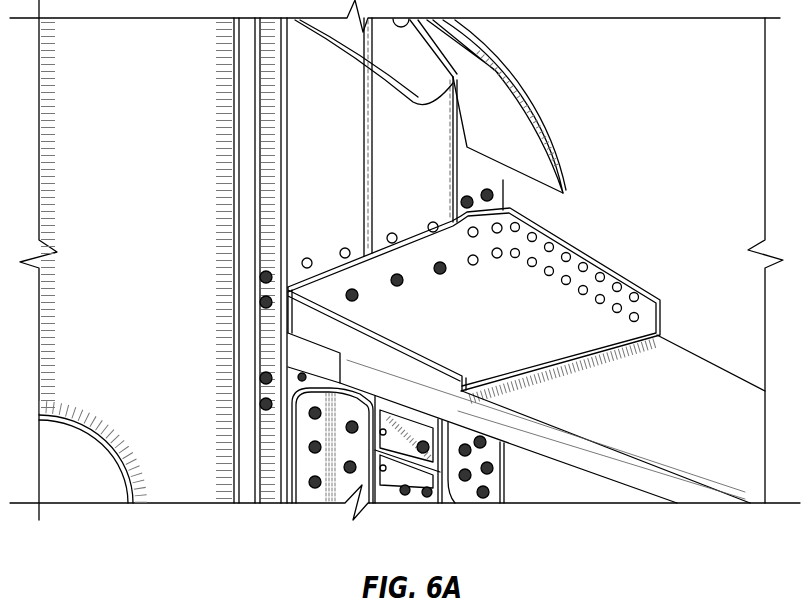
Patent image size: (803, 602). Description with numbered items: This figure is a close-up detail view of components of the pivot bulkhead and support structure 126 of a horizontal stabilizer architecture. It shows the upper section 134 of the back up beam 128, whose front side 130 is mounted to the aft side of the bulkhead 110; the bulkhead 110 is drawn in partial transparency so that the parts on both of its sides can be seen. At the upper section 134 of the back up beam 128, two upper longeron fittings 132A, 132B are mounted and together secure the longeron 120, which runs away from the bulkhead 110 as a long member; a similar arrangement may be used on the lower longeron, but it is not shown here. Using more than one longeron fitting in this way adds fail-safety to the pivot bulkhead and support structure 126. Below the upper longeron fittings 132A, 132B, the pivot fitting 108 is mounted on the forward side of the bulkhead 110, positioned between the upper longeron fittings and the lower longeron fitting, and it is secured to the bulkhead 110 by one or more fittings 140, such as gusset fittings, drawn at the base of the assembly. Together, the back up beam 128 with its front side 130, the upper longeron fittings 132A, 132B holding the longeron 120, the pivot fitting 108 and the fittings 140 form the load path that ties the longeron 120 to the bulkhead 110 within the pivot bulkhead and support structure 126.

The pivot fitting 108 is at (302, 458).
The bulkhead 110 is at (139, 199).
The longeron 120 is at (692, 376).
The pivot bulkhead and support structure 126 is at (171, 490).
The back up beam 128 is at (405, 108).
The front side 130 is at (351, 144).
The upper longeron fitting 132A is at (528, 312).
The upper longeron fitting 132B is at (298, 357).
The upper section 134 is at (188, 113).
The fitting 140 is at (443, 476).